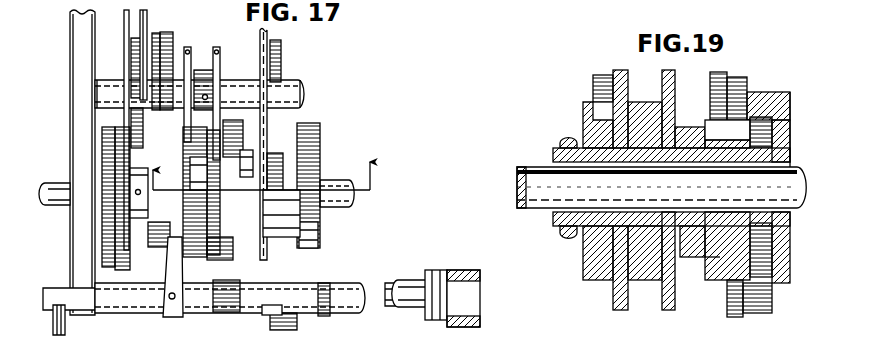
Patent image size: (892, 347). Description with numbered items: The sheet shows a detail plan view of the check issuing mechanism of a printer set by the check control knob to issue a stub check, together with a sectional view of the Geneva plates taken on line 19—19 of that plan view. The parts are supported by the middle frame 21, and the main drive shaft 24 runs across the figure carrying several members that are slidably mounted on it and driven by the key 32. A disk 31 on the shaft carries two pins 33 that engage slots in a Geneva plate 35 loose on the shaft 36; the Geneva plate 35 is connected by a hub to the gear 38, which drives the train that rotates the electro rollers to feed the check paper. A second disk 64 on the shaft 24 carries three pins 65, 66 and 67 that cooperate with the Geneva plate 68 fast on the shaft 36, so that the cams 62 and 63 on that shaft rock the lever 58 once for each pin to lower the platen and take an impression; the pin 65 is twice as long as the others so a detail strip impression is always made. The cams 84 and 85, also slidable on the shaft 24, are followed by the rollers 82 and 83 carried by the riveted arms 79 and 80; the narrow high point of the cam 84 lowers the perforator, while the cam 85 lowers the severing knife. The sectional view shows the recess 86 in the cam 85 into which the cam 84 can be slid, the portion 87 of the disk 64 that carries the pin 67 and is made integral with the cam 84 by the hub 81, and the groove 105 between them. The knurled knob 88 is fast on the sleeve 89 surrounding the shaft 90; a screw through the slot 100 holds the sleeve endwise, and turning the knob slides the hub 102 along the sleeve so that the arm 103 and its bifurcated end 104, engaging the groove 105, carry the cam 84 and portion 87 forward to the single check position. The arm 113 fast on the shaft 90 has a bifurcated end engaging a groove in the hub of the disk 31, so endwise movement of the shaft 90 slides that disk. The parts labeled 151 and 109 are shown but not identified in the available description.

In FIG. 17, the middle frame 21 is at (70, 64).
In FIG. 17, the main drive shaft 24 is at (340, 200).
In FIG. 19, the main drive shaft 24 is at (532, 185).
In FIG. 17, the bracket 151 is at (65, 322).
In FIG. 17, the cam 63 is at (131, 47).
In FIG. 17, the lever 58 is at (145, 33).
In FIG. 17, the cam 62 is at (156, 33).
In FIG. 17, the gear 38 is at (166, 40).
In FIG. 17, the Geneva plate 35 is at (187, 47).
In FIG. 17, the shaft 36 is at (237, 84).
In FIG. 17, the Geneva plate 68 is at (217, 47).
In FIG. 17, the arm 79 is at (260, 50).
In FIG. 19, the arm 79 is at (720, 82).
In FIG. 17, the arm 80 is at (280, 66).
In FIG. 19, the arm 80 is at (735, 313).
In FIG. 17, the collar 109 is at (160, 238).
In FIG. 17, the pin 66 is at (247, 213).
In FIG. 17, the pin 67 is at (228, 138).
In FIG. 17, the anti-friction roller 82 is at (275, 155).
In FIG. 19, the anti-friction roller 82 is at (738, 92).
In FIG. 17, the recess 86 is at (308, 152).
In FIG. 19, the recess 86 is at (770, 128).
In FIG. 17, the cam 85 is at (313, 250).
In FIG. 19, the cam 85 is at (768, 100).
In FIG. 17, the cam 84 is at (282, 238).
In FIG. 19, the cam 84 is at (725, 245).
In FIG. 17, the pin 65 is at (218, 262).
In FIG. 17, the disk 64 is at (230, 306).
In FIG. 19, the disk 64 is at (668, 305).
In FIG. 17, the arm 113 is at (170, 312).
In FIG. 19, the arm 113 is at (568, 236).
In FIG. 17, the slot 100 is at (322, 283).
In FIG. 17, the hub 102 is at (292, 315).
In FIG. 17, the arm 103 is at (262, 316).
In FIG. 17, the shaft 90 is at (390, 287).
In FIG. 17, the sleeve 89 is at (410, 283).
In FIG. 17, the knurled knob 88 is at (450, 275).
In FIG. 17, the section line 19 is at (263, 177).
In FIG. 19, the pins 33 is at (600, 84).
In FIG. 19, the portion 87 is at (683, 127).
In FIG. 19, the hub 81 is at (705, 133).
In FIG. 19, the key 32 is at (782, 163).
In FIG. 19, the disk 31 is at (618, 296).
In FIG. 19, the bifurcated end 104 is at (716, 262).
In FIG. 19, the groove 105 is at (718, 258).
In FIG. 19, the anti-friction roller 83 is at (757, 312).